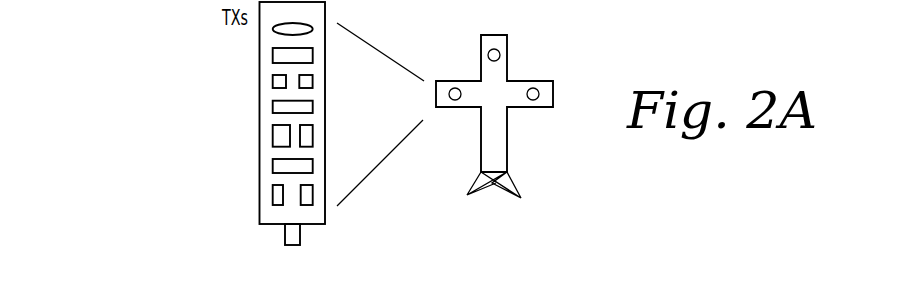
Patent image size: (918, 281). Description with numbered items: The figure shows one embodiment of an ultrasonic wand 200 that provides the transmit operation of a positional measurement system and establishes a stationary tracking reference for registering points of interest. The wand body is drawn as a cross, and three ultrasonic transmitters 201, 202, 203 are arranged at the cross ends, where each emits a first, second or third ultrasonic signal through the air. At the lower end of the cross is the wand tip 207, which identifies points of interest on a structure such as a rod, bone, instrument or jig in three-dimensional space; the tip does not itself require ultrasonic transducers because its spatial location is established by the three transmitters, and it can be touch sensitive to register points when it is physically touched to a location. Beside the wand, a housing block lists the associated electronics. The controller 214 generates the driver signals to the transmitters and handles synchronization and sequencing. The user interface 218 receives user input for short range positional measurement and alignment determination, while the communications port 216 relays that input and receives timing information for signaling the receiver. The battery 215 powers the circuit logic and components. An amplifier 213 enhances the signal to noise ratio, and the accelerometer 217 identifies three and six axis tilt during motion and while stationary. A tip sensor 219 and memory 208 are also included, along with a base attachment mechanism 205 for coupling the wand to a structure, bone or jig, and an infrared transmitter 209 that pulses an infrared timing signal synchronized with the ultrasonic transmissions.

The ultrasonic wand 200 is at (640, 195).
The ultrasonic transmitter 201 is at (499, 51).
The ultrasonic transmitter 202 is at (533, 88).
The ultrasonic transmitter 203 is at (453, 100).
The base attachment mechanism 205 is at (175, 215).
The wand tip 207 is at (494, 190).
The memory 208 is at (214, 209).
The infrared transmitter 209 is at (188, 220).
The amplifier 213 is at (245, 45).
The controller 214 is at (198, 69).
The battery 215 is at (225, 85).
The communications port 216 is at (189, 108).
The accelerometer 217 is at (184, 132).
The user interface 218 is at (191, 145).
The tip sensor 219 is at (211, 173).